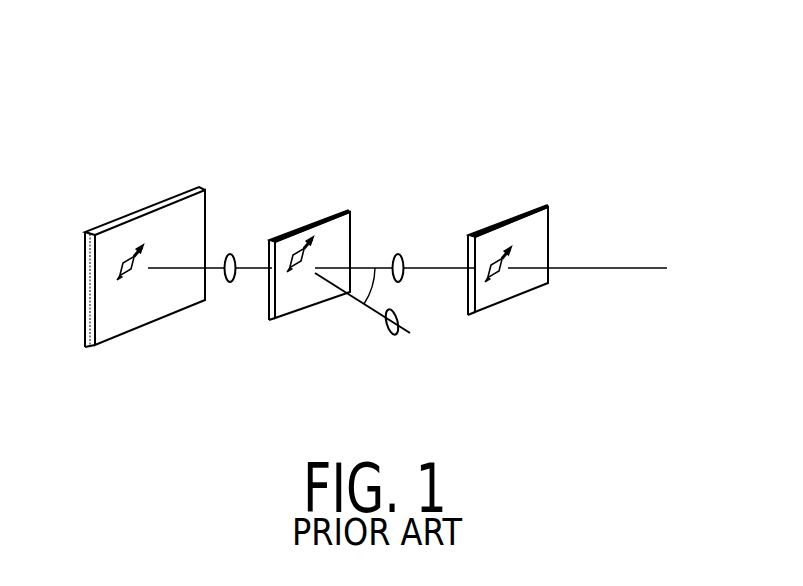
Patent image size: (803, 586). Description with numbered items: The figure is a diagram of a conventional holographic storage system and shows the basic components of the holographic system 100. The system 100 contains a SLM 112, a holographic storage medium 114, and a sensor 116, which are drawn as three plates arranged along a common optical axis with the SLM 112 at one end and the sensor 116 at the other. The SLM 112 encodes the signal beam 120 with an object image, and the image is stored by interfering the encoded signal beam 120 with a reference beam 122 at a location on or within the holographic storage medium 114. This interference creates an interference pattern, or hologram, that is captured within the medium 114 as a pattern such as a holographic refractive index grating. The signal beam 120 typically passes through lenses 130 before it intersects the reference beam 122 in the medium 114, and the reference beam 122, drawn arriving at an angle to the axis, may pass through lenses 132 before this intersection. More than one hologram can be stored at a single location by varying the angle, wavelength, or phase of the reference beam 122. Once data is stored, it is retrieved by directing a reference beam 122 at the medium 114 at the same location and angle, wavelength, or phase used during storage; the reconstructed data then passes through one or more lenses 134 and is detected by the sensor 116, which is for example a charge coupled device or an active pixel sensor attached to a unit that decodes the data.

The holographic system 100 is at (457, 80).
The SLM 112 is at (535, 207).
The holographic storage medium 114 is at (325, 218).
The sensor 116 is at (175, 195).
The signal beam 120 is at (615, 268).
The reference beam 122 is at (363, 308).
The lenses 130 is at (400, 254).
The lenses 132 is at (393, 335).
The lenses 134 is at (233, 255).